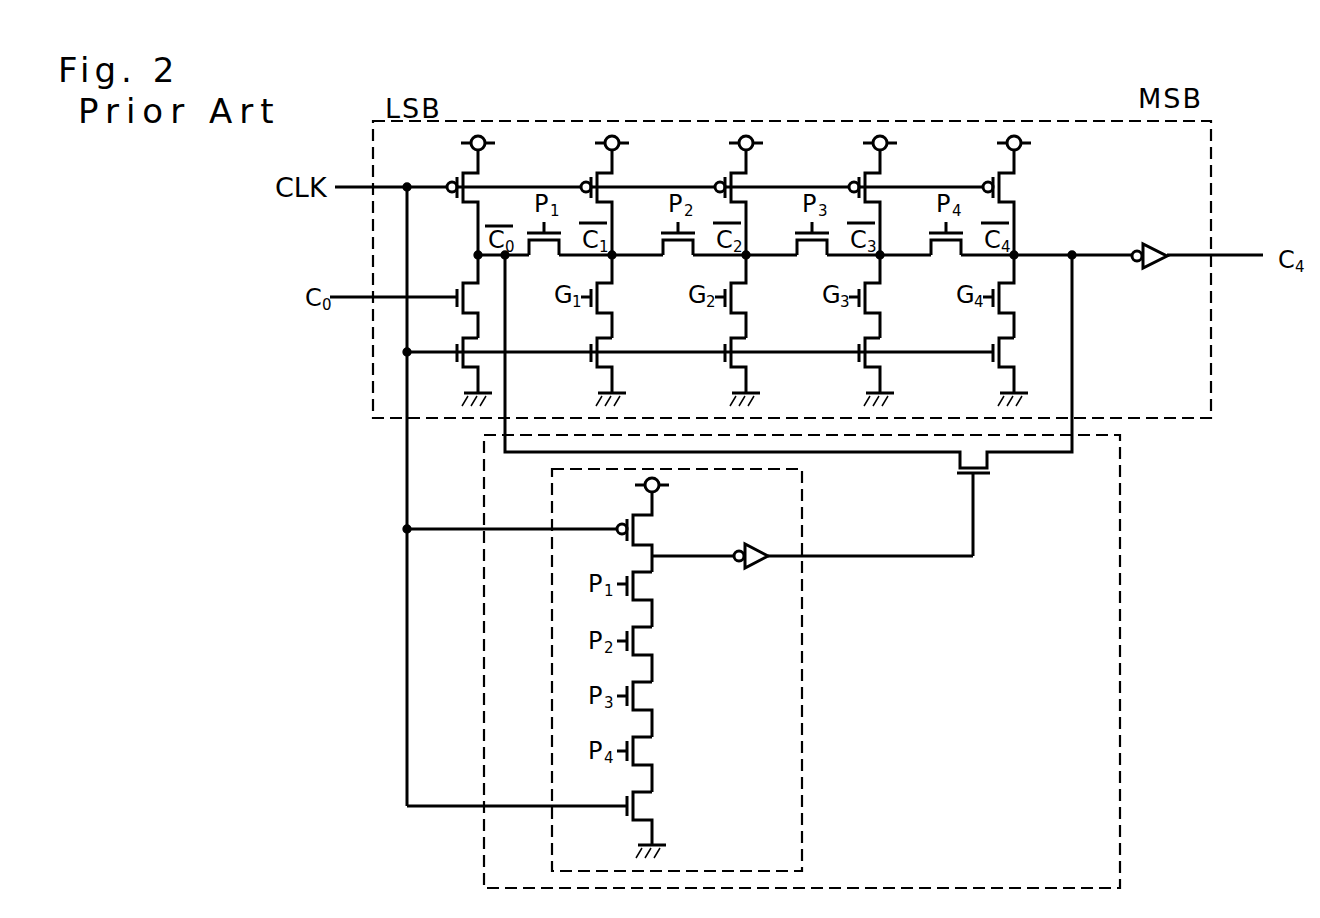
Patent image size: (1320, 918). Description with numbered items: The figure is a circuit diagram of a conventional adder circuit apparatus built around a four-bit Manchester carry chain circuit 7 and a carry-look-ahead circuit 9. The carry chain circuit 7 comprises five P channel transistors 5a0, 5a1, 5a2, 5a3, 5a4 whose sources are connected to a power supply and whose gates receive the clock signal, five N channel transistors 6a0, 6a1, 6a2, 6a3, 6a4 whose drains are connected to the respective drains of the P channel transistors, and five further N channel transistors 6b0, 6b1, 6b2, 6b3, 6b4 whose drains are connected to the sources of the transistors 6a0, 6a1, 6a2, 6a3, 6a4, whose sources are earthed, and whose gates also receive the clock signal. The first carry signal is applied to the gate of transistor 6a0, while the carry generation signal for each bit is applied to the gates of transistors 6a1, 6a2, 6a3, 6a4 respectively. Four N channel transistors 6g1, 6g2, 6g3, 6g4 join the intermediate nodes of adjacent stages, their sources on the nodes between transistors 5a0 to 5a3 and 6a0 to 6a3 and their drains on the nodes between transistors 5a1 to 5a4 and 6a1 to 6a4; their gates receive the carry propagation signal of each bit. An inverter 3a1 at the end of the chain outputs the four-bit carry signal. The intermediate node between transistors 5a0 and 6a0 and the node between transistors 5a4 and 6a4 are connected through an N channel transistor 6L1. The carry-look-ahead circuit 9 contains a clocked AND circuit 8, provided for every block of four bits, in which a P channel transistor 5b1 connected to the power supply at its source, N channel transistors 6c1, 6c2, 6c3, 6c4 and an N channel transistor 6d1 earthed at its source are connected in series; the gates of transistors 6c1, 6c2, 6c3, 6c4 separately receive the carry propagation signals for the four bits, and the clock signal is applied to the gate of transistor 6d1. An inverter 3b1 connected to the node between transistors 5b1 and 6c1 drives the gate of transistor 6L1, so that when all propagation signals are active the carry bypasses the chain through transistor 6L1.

The 4-bit Manchester-carry-chain circuit 7 is at (1211, 168).
The clocked AND circuit 8 is at (802, 712).
The carry-look-ahead circuit 9 is at (1120, 620).
The P channel transistor 5a0 is at (450, 182).
The P channel transistor 5a1 is at (584, 182).
The P channel transistor 5a2 is at (718, 182).
The P channel transistor 5a3 is at (852, 182).
The P channel transistor 5a4 is at (986, 182).
The N channel transistor 6a0 is at (484, 305).
The N channel transistor 6a1 is at (618, 305).
The N channel transistor 6a2 is at (752, 305).
The N channel transistor 6a3 is at (886, 305).
The N channel transistor 6a4 is at (1018, 302).
The N channel transistor 6b0 is at (484, 362).
The N channel transistor 6b1 is at (618, 362).
The N channel transistor 6b2 is at (752, 362).
The N channel transistor 6b3 is at (886, 362).
The N channel transistor 6b4 is at (1018, 357).
The N channel transistor 6g1 is at (549, 262).
The N channel transistor 6g2 is at (683, 262).
The N channel transistor 6g3 is at (817, 262).
The N channel transistor 6g4 is at (951, 262).
The inverter 3a1 is at (1157, 245).
The inverter 3b1 is at (757, 572).
The P channel transistor 5b1 is at (658, 537).
The N channel transistor 6c1 is at (658, 594).
The N channel transistor 6c2 is at (658, 650).
The N channel transistor 6c3 is at (658, 705).
The N channel transistor 6c4 is at (658, 760).
The N channel transistor 6d1 is at (658, 815).
The N channel transistor 6L1 is at (988, 478).